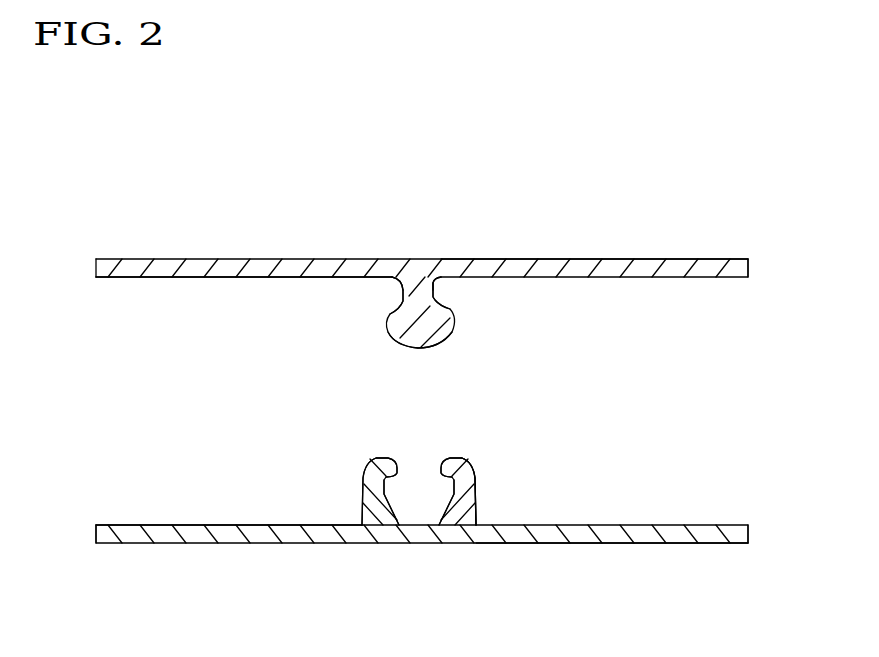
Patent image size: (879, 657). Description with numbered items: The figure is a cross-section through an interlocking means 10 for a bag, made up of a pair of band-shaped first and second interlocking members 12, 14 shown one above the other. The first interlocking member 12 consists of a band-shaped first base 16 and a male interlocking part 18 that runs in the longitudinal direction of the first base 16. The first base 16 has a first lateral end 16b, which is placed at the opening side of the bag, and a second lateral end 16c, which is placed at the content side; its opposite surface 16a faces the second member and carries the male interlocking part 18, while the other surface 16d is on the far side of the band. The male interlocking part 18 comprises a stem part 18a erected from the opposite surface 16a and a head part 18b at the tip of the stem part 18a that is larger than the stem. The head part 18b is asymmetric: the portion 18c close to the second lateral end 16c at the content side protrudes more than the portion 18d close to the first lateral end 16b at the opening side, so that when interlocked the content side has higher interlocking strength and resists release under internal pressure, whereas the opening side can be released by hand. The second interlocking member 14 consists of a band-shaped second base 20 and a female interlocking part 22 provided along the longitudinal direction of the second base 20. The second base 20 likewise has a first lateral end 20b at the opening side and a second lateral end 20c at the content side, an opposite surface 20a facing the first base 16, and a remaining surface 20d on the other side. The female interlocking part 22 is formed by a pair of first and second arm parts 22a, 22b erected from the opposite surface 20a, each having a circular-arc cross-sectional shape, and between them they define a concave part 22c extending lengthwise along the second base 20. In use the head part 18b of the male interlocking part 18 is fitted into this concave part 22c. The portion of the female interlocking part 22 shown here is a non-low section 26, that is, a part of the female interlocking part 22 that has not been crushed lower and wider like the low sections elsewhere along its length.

The interlocking means 10 is at (533, 188).
The first interlocking member 12 is at (681, 258).
The second interlocking member 14 is at (683, 543).
The first base 16 is at (300, 258).
The opposite surface of the first base 16a is at (190, 278).
The first lateral end of the first base 16b is at (96, 268).
The second lateral end of the first base 16c is at (750, 268).
The upper surface of first plate portion 16d is at (588, 258).
The male interlocking part 18 is at (453, 328).
The stem part 18a is at (419, 298).
The head part 18b is at (393, 330).
The portion close to the second lateral end 18c is at (457, 300).
The portion close to the first lateral end 18d is at (393, 303).
The second base 20 is at (232, 544).
The opposite surface of the second base 20a is at (190, 524).
The first lateral end of the second base 20b is at (96, 534).
The second lateral end of the second base 20c is at (750, 533).
The lower surface of second plate portion 20d is at (585, 544).
The female interlocking part 22 is at (485, 475).
The first arm part 22a is at (363, 495).
The second arm part 22b is at (480, 497).
The concave part 22c is at (402, 500).
The non-low section 26 is at (486, 483).